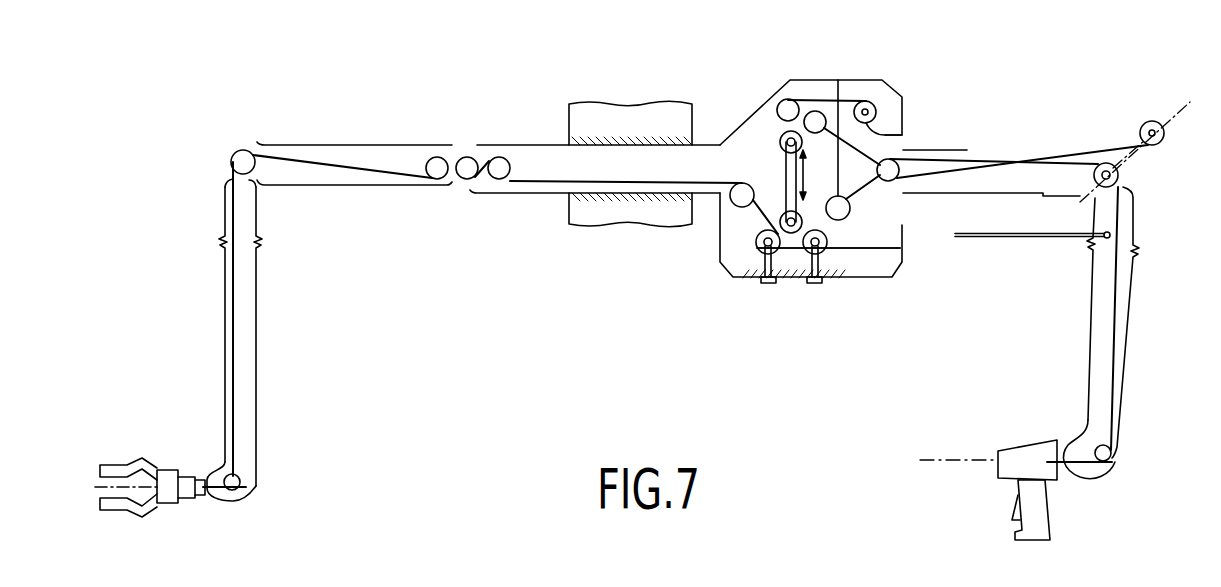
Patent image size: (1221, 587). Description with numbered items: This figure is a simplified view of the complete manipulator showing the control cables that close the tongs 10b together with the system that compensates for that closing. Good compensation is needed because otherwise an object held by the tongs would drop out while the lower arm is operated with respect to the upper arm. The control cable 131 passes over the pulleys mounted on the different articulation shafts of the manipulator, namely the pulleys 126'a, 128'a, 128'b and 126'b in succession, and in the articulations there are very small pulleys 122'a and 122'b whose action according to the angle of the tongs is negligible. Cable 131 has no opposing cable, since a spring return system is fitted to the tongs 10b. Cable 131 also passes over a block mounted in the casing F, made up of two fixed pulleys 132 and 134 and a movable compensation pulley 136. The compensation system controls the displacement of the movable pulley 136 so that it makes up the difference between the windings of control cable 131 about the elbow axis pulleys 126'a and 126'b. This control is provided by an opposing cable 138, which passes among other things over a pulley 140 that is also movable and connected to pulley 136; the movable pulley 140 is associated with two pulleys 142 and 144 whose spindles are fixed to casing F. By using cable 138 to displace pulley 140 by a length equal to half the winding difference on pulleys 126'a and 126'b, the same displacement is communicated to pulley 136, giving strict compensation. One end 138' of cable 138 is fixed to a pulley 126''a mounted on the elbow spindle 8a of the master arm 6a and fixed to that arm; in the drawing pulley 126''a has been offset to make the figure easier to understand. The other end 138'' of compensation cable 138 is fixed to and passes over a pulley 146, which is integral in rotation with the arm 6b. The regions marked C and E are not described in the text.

The master arm 6a is at (1092, 338).
The arm 6b is at (257, 341).
The elbow spindle 8a is at (1106, 172).
The tongs 10b is at (168, 470).
The very small pulley 122'a is at (1036, 490).
The very small pulley 122'b is at (275, 493).
The elbow axis pulley 126'a is at (1149, 199).
The pulley 126''a is at (1154, 163).
The elbow axis pulley 126'b is at (283, 134).
The pulley 128'a is at (1012, 187).
The pulley 128'b is at (470, 139).
The control cable 131 is at (1117, 355).
The fixed pulley 132 is at (900, 248).
The fixed pulley 134 is at (757, 248).
The movable compensation pulley 136 is at (790, 233).
The opposing cable 138 is at (887, 75).
The cable end 138' is at (1164, 88).
The cable end 138'' is at (932, 86).
The movable pulley 140 is at (780, 142).
The pulley 142 is at (785, 102).
The pulley 144 is at (813, 111).
The pulley 146 is at (903, 135).
The carriage section C is at (545, 195).
The housing E is at (622, 218).
The casing F is at (858, 277).